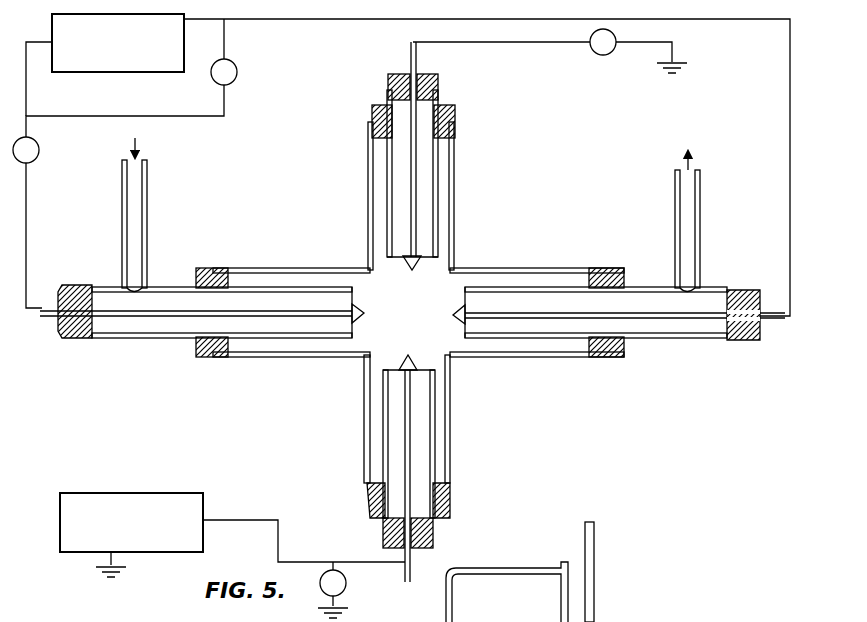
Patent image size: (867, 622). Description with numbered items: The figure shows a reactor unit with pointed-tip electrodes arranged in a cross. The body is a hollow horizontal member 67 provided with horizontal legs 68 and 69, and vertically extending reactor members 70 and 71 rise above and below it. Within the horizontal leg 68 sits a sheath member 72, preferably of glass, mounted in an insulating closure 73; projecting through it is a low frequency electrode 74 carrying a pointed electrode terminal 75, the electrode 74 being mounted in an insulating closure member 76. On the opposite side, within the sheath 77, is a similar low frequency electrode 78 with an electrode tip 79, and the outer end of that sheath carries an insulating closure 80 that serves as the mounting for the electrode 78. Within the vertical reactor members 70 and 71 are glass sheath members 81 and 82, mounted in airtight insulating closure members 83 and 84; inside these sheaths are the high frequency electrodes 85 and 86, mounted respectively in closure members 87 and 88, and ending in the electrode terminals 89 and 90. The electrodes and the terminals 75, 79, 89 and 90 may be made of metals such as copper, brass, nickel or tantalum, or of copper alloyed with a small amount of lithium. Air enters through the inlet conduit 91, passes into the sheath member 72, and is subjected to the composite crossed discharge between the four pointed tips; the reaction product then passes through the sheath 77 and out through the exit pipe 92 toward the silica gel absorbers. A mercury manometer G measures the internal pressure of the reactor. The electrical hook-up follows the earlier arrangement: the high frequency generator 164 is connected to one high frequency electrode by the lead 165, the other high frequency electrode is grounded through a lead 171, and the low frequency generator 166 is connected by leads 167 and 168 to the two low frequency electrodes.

The hollow horizontal member 67 is at (345, 266).
The horizontal leg 68 is at (265, 357).
The horizontal leg 69 is at (555, 357).
The vertically extending reactor member 70 is at (455, 188).
The vertically extending reactor member 71 is at (364, 425).
The sheath member 72 is at (164, 338).
The insulating closure 73 is at (206, 268).
The electrode 74 is at (130, 312).
The pointed electrode terminal 75 is at (363, 311).
The insulating closure member 76 is at (62, 332).
The sheath 77 is at (672, 338).
The low frequency electrode 78 is at (635, 314).
The electrode tip 79 is at (455, 316).
The insulating closure 80 is at (750, 340).
The glass sheath member 81 is at (390, 183).
The glass sheath member 82 is at (436, 418).
The airtight insulating closure member 83 is at (455, 114).
The airtight insulating closure member 84 is at (370, 505).
The high frequency electrode 85 is at (416, 162).
The high frequency electrode 86 is at (410, 462).
The closure member 87 is at (438, 82).
The closure member 88 is at (385, 540).
The electrode terminal 89 is at (413, 268).
The electrode terminal 90 is at (409, 364).
The inlet conduit 91 is at (148, 218).
The exit pipe 92 is at (701, 216).
The high frequency generator 164 is at (134, 493).
The lead 165 is at (243, 520).
The low frequency generator 166 is at (125, 72).
The lead 167 is at (28, 194).
The lead 168 is at (303, 26).
The lead 171 is at (530, 46).
The mercury manometer G is at (600, 572).